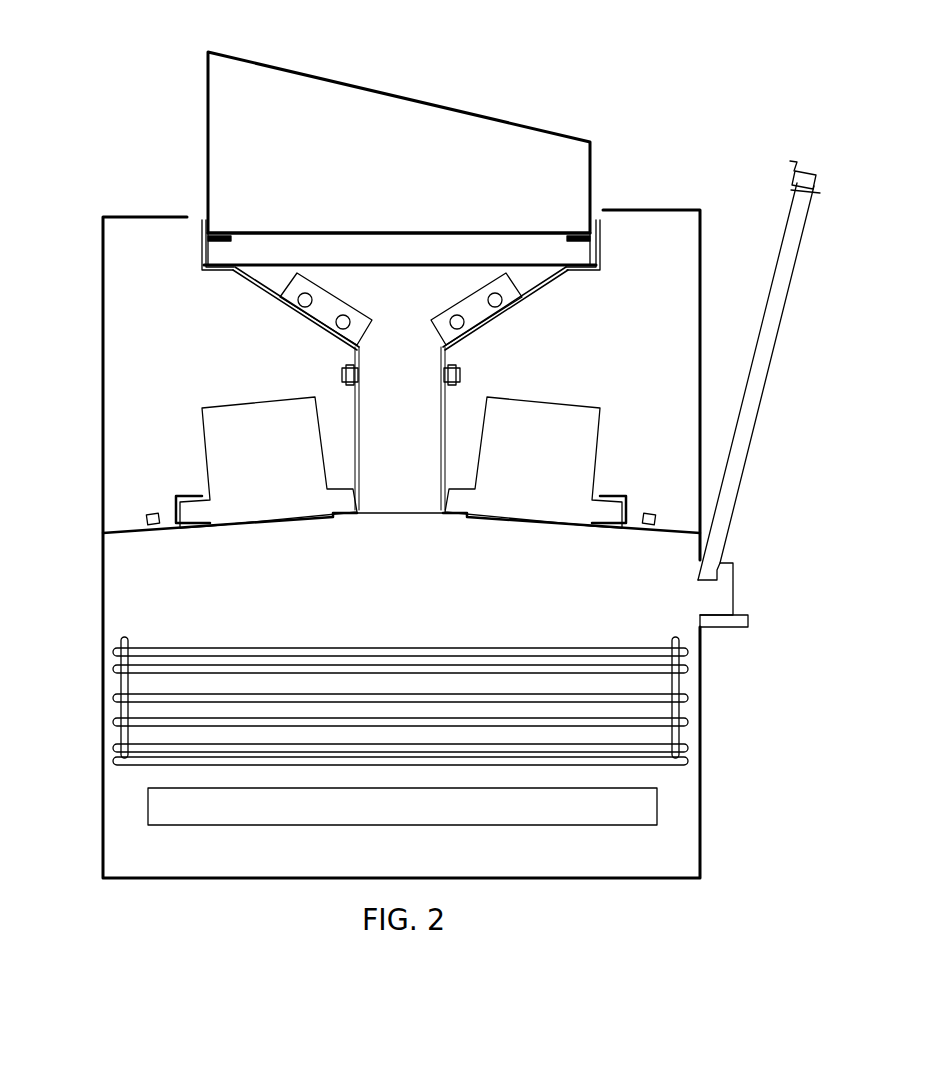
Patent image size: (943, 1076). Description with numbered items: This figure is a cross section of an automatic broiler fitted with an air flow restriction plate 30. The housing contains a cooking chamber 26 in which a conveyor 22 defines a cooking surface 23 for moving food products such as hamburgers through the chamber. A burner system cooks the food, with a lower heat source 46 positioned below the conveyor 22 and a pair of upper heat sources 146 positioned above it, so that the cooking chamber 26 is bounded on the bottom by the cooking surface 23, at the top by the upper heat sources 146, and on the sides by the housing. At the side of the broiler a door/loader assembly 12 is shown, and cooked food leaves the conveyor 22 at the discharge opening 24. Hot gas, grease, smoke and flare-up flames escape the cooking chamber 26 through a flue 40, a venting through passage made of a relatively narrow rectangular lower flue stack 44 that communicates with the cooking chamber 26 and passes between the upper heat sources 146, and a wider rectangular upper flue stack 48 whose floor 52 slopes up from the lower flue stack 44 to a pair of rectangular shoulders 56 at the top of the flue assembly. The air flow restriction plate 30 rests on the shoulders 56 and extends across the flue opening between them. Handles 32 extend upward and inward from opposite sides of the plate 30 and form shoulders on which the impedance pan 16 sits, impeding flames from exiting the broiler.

The door/loader assembly 12 is at (768, 378).
The impedance pan 16 is at (207, 51).
The conveyor 22 is at (115, 730).
The cooking surface 23 is at (355, 650).
The discharge opening 24 is at (100, 588).
The cooking chamber 26 is at (415, 603).
The air flow restriction plate 30 is at (437, 265).
The handles 32 is at (215, 239).
The flue 40 is at (414, 435).
The lower flue stack 44 is at (446, 403).
The lower heat source 46 is at (253, 825).
The upper flue stack 48 is at (273, 285).
The floor 52 is at (510, 310).
The rectangular shoulders 56 is at (202, 271).
The upper heat source 146 is at (246, 405).